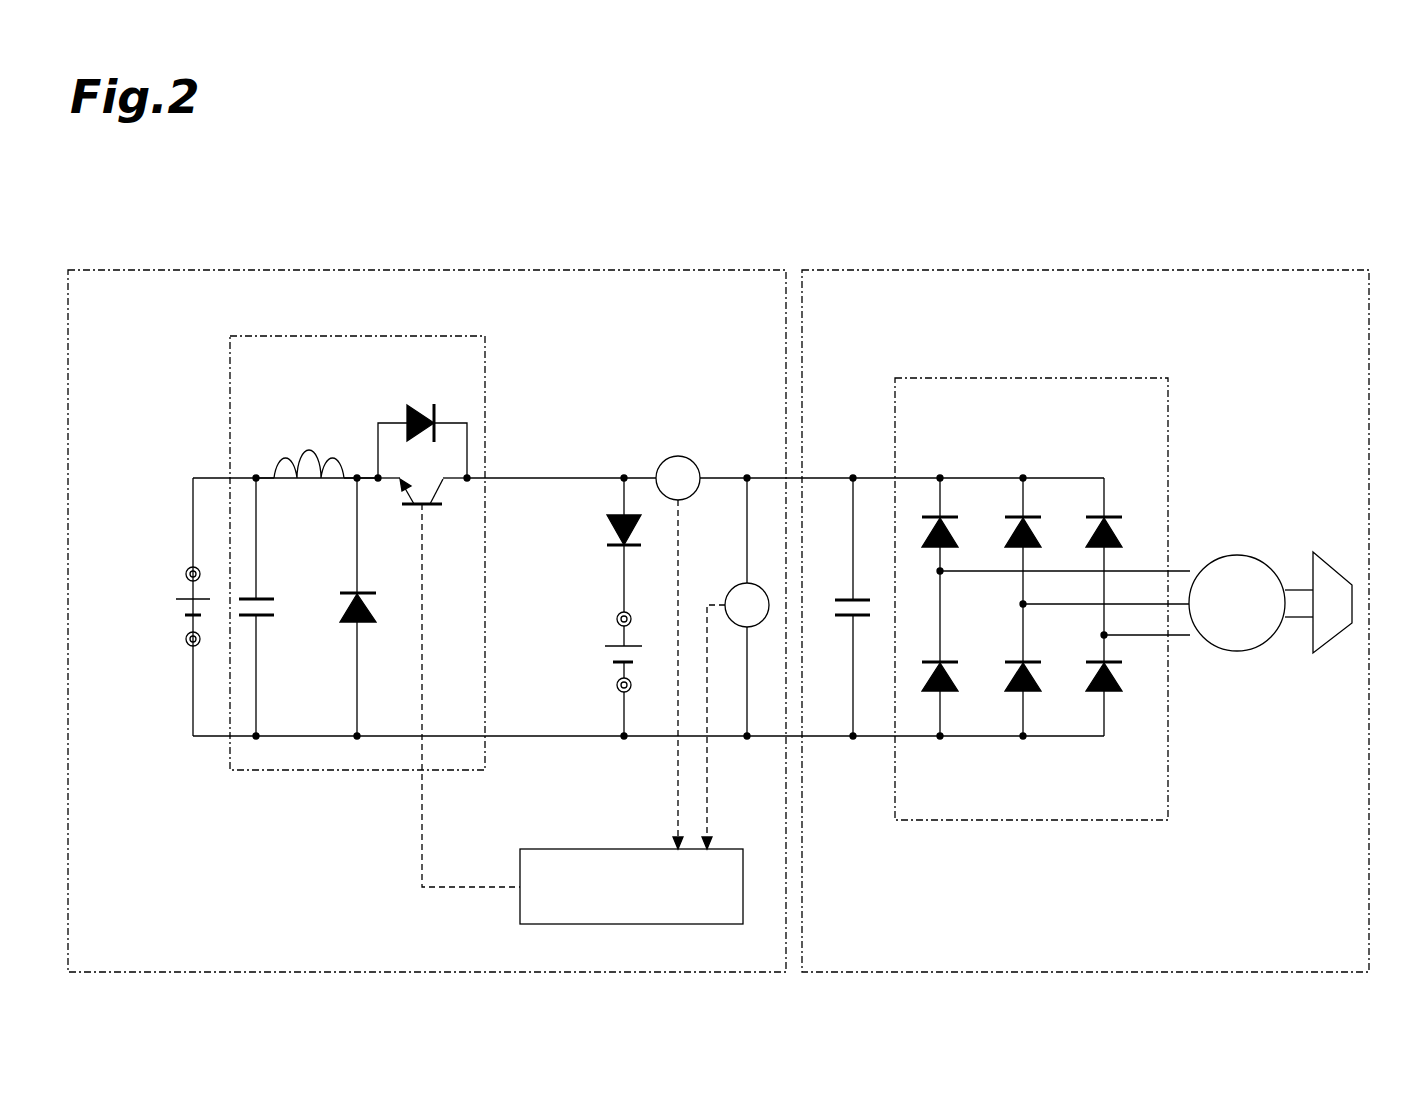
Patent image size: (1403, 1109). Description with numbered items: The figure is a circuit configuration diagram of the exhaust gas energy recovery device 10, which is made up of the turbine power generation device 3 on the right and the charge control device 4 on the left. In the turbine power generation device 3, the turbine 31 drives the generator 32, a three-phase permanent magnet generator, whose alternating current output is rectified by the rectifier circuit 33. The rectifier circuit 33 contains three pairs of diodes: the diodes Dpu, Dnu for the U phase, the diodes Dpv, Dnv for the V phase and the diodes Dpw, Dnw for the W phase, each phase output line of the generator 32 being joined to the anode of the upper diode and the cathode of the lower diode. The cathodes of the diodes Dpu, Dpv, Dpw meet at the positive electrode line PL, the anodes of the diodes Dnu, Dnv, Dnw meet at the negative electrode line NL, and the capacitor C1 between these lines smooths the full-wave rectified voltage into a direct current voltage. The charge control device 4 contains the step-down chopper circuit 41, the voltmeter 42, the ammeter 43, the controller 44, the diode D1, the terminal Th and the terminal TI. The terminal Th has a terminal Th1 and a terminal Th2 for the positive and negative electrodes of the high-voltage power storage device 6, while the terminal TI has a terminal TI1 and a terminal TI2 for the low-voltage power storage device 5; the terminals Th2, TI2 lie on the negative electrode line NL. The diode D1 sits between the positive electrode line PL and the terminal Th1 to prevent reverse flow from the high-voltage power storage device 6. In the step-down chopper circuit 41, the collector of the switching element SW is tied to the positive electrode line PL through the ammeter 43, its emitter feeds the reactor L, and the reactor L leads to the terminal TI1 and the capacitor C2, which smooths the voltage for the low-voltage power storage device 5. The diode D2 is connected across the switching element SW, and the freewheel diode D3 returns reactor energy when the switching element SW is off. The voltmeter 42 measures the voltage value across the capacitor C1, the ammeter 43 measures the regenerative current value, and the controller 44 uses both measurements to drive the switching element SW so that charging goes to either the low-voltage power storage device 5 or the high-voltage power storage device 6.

The exhaust gas energy recovery device 10 is at (1207, 160).
The turbine power generation device 3 is at (1277, 270).
The charge control device 4 is at (700, 270).
The step-down chopper circuit 41 is at (488, 352).
The voltmeter 42 is at (733, 588).
The ammeter 43 is at (687, 457).
The controller 44 is at (567, 849).
The low-voltage power storage device 5 is at (203, 596).
The high-voltage power storage device 6 is at (636, 645).
The turbine 31 is at (1335, 565).
The generator 32 is at (1237, 555).
The rectifier circuit 33 is at (1148, 378).
The reactor L is at (330, 449).
The capacitor C1 is at (851, 598).
The capacitor C2 is at (258, 598).
The diode D1 is at (604, 538).
The diode D2 is at (398, 407).
The diode D3 is at (367, 590).
The switching element SW is at (438, 510).
The terminal TI is at (115, 555).
The terminal TI1 is at (185, 574).
The terminal TI2 is at (185, 639).
The terminal Th is at (535, 603).
The terminal Th1 is at (617, 619).
The terminal Th2 is at (617, 685).
The positive electrode line PL is at (826, 478).
The negative electrode line NL is at (826, 738).
The diode Dpu is at (950, 505).
The diode Dpv is at (1033, 505).
The diode Dpw is at (1114, 505).
The diode Dnu is at (950, 695).
The diode Dnv is at (1033, 695).
The diode Dnw is at (1114, 695).